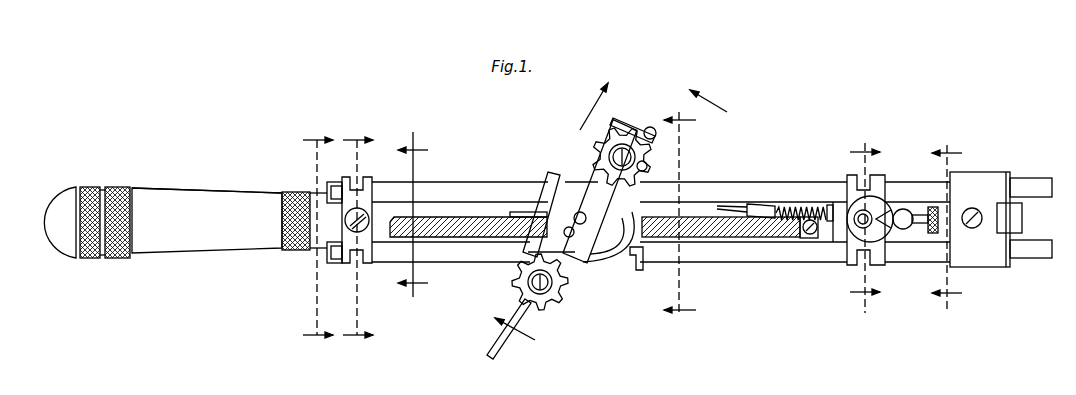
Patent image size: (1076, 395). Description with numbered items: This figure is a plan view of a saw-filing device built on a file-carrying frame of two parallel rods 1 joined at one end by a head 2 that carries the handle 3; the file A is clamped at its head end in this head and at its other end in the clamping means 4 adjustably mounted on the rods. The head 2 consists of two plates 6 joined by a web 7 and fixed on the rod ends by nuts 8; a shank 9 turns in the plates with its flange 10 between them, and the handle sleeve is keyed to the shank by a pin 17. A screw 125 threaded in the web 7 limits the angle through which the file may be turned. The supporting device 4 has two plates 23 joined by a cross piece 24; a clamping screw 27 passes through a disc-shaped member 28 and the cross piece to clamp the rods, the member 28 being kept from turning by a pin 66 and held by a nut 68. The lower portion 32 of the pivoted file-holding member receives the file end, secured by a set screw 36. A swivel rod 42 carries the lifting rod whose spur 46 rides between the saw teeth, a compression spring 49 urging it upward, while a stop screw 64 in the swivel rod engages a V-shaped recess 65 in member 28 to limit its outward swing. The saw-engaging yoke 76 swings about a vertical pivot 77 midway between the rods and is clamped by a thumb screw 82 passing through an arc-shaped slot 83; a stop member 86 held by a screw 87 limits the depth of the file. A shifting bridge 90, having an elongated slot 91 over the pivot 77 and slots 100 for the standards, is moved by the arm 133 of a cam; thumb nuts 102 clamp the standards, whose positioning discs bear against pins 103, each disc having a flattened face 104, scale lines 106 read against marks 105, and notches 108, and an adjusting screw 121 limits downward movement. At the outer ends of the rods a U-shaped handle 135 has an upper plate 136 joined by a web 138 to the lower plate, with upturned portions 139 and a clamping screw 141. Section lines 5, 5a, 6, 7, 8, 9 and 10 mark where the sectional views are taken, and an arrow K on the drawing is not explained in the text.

The rods 1 is at (415, 192).
The head 2 is at (360, 185).
The handle 3 is at (175, 245).
The clamping means 4 is at (848, 190).
The section line 5— 5 is at (616, 222).
The section line 5a— 5a is at (680, 213).
The plates 6 is at (300, 308).
The web 7 is at (336, 298).
The nuts 8 is at (328, 280).
The shank 9 is at (413, 212).
The flange 10 is at (56, 205).
The pin 17 is at (175, 196).
The plates 23 is at (860, 229).
The cross piece 24 is at (862, 266).
The clamping screw 27 is at (880, 200).
The disc-shaped member 28 is at (858, 226).
The lower portion of file holding member 32 is at (808, 240).
The set screw 36 is at (818, 216).
The swivel rod 42 is at (760, 218).
The tooth-engaging spur 46 is at (735, 206).
The compression spring 49 is at (790, 207).
The stop screw 64 is at (930, 207).
The V-shaped recess 65 is at (900, 210).
The pin 66 is at (868, 205).
The nut 68 is at (856, 180).
The saw-engaging supporting yoke 76 is at (612, 286).
The vertical pivot 77 is at (560, 186).
The clamping screw 82 is at (614, 266).
The arc-shaped slot 83 is at (643, 264).
The adjustable stop member 86 is at (640, 126).
The screw 87 is at (656, 122).
The shifting bridge member 90 is at (590, 282).
The elongated slot 91 is at (590, 225).
The elongated slots 100 is at (652, 160).
The thumb nut 102 is at (660, 165).
The pin 103 is at (648, 169).
The flattened portion 104 is at (588, 166).
The marks 105 is at (500, 215).
The scale lines 106 is at (613, 135).
The notches 108 is at (658, 176).
The adjusting screw 121 is at (622, 146).
The screw 125 is at (363, 213).
The handle portion 133 is at (525, 212).
The handle means 135 is at (985, 172).
The upper plate 136 is at (987, 240).
The web 138 is at (1022, 216).
The upwardly bent portions 139 is at (1020, 184).
The screw 141 is at (973, 209).
The file A is at (477, 230).
The direction arrow K is at (588, 106).